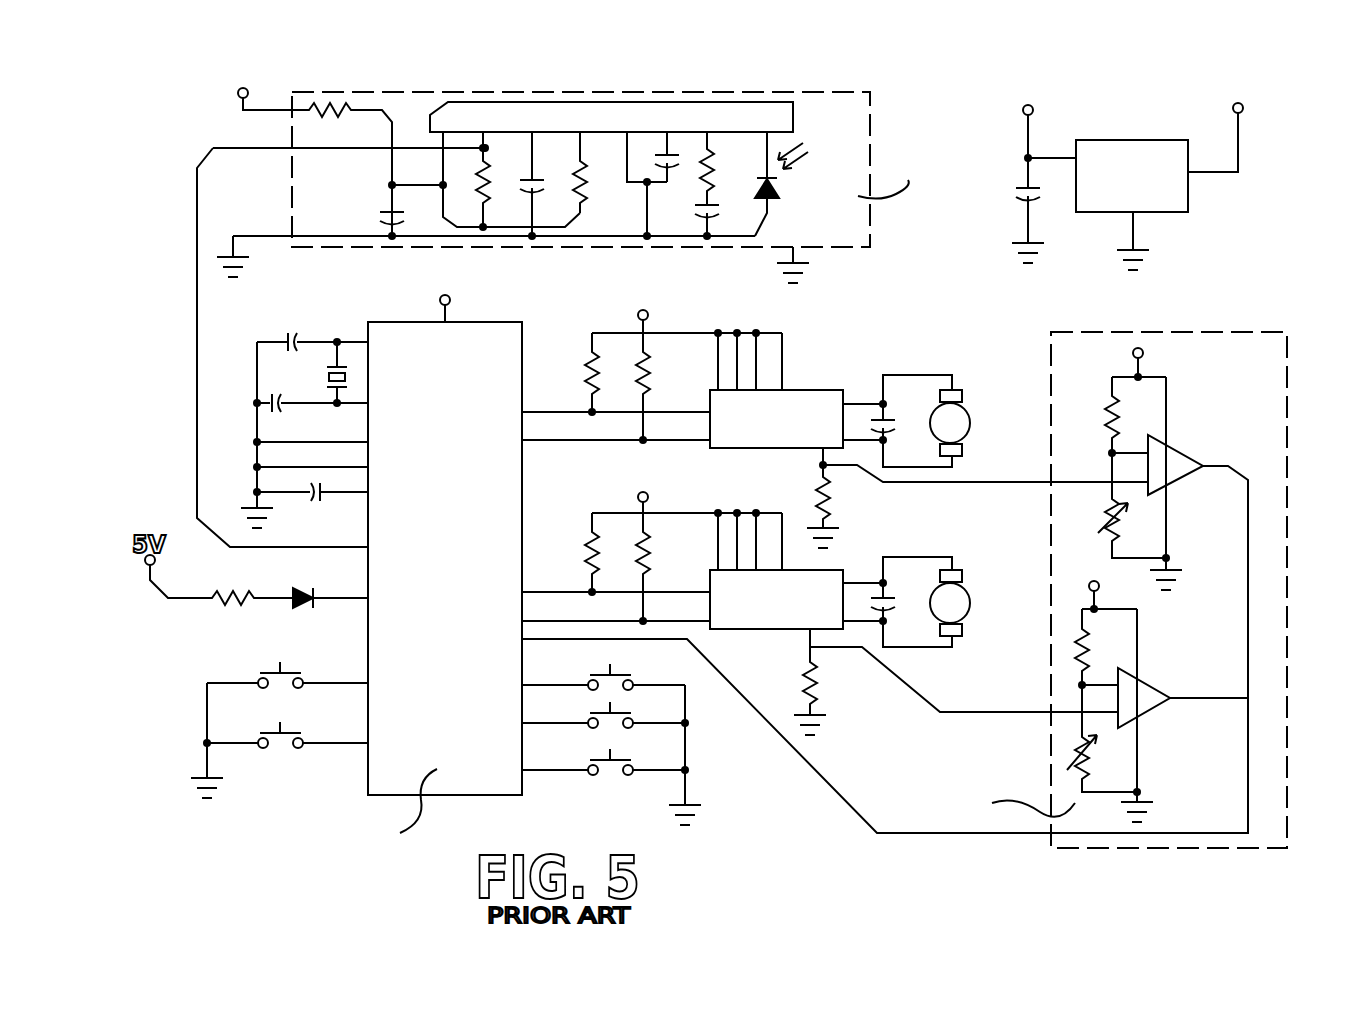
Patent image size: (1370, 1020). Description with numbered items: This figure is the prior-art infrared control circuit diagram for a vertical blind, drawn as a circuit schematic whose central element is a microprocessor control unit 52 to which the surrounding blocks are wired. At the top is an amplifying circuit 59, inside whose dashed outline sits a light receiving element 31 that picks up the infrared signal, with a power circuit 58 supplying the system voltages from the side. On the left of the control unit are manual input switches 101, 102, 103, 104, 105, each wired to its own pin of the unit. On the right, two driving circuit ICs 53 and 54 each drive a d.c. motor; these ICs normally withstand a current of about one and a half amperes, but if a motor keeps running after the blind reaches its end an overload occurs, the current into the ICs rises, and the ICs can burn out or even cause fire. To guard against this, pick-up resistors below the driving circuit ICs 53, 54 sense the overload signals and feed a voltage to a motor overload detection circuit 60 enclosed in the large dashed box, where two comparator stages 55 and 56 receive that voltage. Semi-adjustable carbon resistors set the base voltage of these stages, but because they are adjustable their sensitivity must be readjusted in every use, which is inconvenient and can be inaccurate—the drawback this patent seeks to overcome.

The photodiode (light receiving element) 31 is at (777, 188).
The microprocessor control unit (MCU) 52 is at (492, 497).
The driving circuit IC 53 is at (817, 392).
The driving circuit IC 54 is at (828, 585).
The comparator (first motor overload detector) 55 is at (1183, 462).
The comparator (second motor overload detector) 56 is at (1143, 692).
The power circuit 58 is at (1126, 140).
The amplifying circuit 59 is at (615, 182).
The motor overload detection circuit 60 is at (1114, 590).
The switch 101 is at (287, 662).
The switch 102 is at (287, 722).
The switch 103 is at (603, 668).
The switch 104 is at (603, 712).
The switch 105 is at (603, 756).